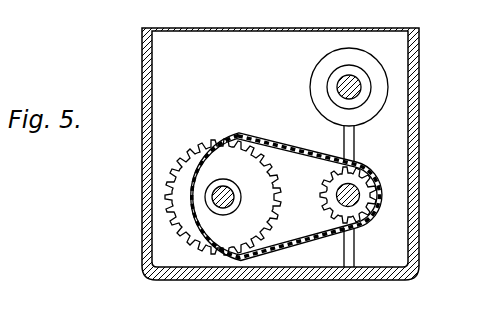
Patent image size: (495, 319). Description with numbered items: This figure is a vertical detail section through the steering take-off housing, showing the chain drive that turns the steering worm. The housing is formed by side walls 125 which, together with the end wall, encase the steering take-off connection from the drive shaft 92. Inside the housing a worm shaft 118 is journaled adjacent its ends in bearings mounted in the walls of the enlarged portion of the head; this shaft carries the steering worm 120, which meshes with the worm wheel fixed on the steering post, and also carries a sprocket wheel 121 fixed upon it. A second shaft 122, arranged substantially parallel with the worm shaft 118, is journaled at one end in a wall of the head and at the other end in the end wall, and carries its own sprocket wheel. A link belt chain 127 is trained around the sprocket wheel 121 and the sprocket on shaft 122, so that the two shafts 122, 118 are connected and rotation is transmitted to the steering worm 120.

The side walls 125 is at (394, 63).
The drive shaft 92 is at (361, 87).
The link belt chain 127 is at (287, 142).
The steering worm 120 is at (380, 188).
The shaft 122 is at (357, 199).
The sprocket wheel 121 is at (170, 196).
The worm shaft 118 is at (212, 200).